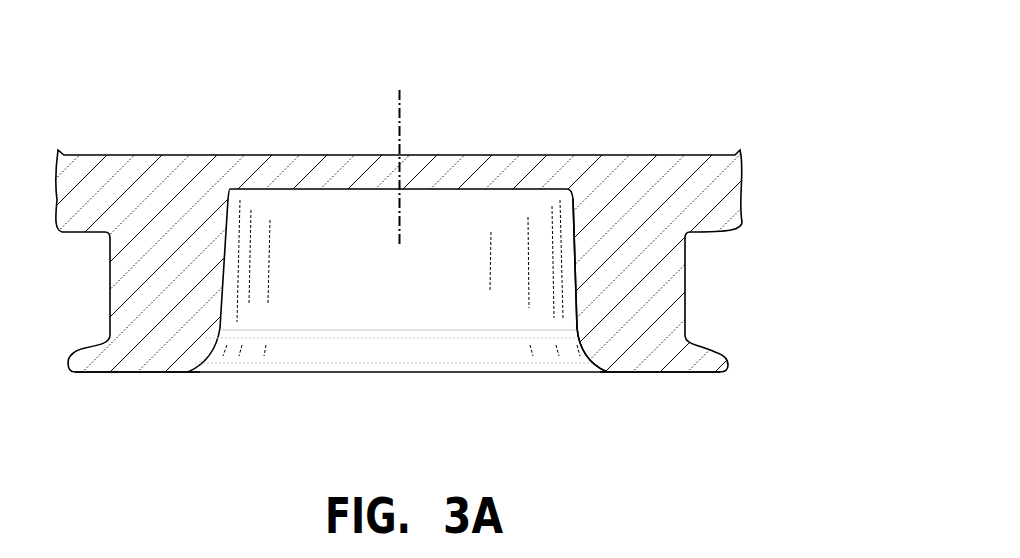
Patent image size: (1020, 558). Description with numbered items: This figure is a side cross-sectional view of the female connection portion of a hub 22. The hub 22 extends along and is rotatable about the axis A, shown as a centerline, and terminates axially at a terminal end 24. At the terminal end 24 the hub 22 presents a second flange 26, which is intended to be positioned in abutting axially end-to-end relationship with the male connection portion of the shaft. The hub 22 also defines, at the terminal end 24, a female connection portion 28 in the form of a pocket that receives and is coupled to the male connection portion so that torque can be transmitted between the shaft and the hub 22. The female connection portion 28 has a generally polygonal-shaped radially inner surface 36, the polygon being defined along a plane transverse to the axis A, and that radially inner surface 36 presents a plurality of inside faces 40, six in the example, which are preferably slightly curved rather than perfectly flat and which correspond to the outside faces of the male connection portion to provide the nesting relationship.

The hub 22 is at (813, 233).
The terminal end 24 is at (155, 372).
The second flange 26 is at (698, 366).
The female connection portion 28 is at (229, 300).
The radially inner surface 36 is at (577, 300).
The inside faces 40 is at (575, 263).
The axis A is at (400, 128).